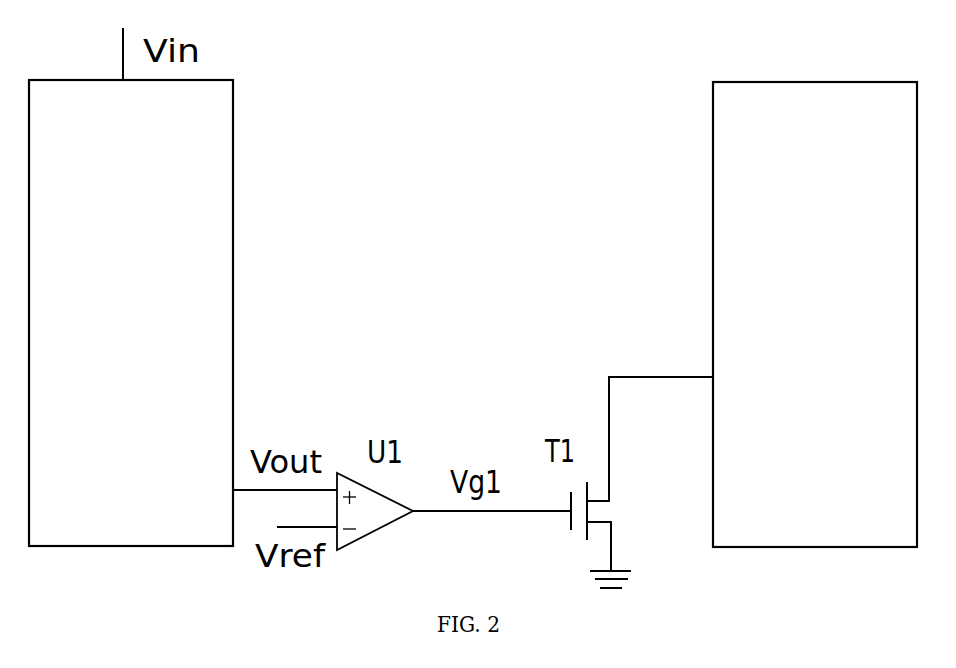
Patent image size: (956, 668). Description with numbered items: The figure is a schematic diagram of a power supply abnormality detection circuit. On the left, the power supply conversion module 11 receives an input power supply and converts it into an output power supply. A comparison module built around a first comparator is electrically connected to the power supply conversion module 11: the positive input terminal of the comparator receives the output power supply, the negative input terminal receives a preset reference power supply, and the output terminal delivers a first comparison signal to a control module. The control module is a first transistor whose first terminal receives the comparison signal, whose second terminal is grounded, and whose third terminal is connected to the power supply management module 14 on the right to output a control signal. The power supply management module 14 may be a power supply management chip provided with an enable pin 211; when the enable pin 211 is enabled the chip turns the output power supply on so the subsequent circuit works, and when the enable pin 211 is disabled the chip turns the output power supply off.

The power supply conversion module 11 is at (233, 313).
The power supply management module 14 is at (713, 289).
The enable pin 211 is at (650, 419).